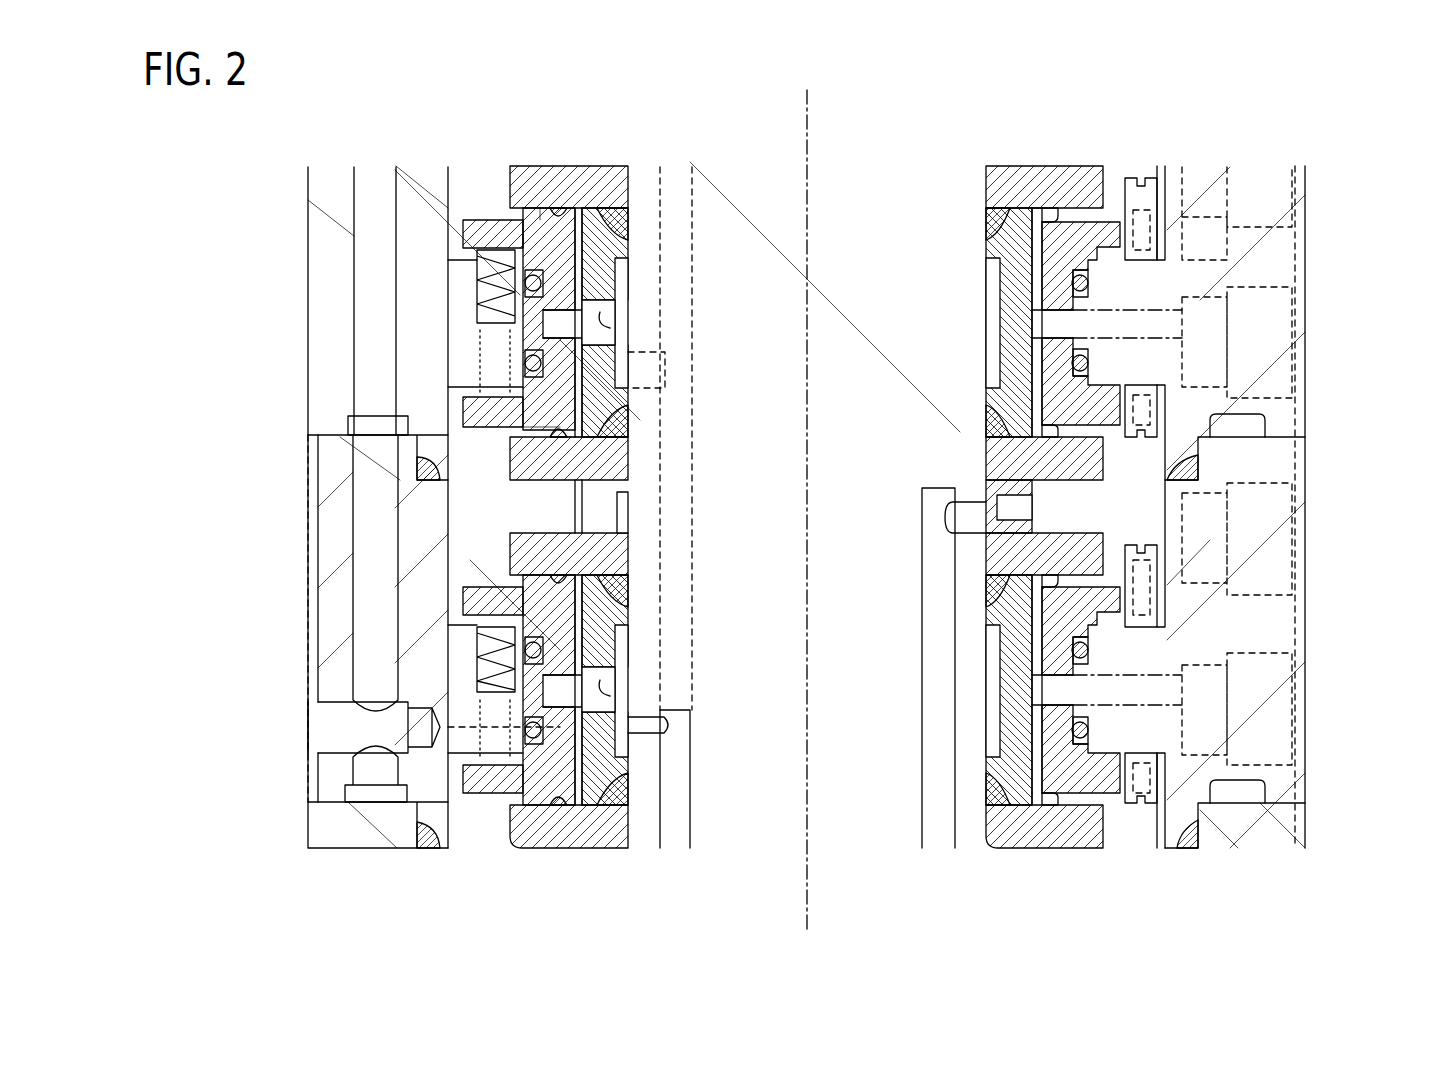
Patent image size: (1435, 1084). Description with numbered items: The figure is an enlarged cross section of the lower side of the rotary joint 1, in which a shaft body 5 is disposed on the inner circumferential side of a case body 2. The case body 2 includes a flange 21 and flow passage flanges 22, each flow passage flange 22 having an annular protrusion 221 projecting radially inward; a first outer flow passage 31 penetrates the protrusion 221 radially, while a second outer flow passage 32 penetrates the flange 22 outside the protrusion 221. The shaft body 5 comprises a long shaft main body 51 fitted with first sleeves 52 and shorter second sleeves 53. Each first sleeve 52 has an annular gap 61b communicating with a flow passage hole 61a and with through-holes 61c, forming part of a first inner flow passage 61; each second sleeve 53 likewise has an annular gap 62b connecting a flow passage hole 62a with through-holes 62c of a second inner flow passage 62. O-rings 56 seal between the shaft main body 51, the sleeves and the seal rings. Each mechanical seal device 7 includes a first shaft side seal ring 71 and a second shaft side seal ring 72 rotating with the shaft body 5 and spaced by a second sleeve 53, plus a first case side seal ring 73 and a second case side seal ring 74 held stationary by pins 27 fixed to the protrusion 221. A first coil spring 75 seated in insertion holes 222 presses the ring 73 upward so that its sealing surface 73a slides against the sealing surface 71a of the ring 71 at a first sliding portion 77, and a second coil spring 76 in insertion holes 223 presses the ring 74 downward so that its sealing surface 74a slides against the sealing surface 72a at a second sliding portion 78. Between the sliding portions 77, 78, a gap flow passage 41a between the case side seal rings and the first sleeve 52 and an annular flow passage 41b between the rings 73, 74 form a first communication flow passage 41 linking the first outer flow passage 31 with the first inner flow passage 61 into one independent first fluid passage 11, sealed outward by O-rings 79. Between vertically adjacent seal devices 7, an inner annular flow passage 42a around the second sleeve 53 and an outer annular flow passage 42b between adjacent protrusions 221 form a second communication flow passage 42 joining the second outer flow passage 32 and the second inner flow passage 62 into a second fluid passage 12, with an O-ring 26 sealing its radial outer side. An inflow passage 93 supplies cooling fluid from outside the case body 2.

The joint 1 is at (274, 151).
The case body 2 is at (302, 250).
The shaft body 5 is at (853, 158).
The mechanical seal device 7 is at (467, 182).
The first fluid passage 11 is at (1302, 350).
The second fluid passage 12 is at (1302, 570).
The flange 21 is at (1290, 825).
The flow passage flange 22 is at (1290, 268).
The O-ring 26 is at (1190, 470).
The pin 27 is at (1140, 215).
The first outer flow passage 31 is at (1298, 300).
The second outer flow passage 32 is at (1135, 513).
The first communication flow passage 41 is at (560, 324).
The gap flow passage 41a is at (1037, 380).
The annular flow passage 41b is at (1040, 322).
The second communication flow passage 42 is at (1080, 492).
The inner annular flow passage 42a is at (1035, 548).
The outer annular flow passage 42b is at (1160, 535).
The shaft main body 51 is at (762, 186).
The first sleeve 52 is at (600, 275).
The second sleeve 53 is at (580, 508).
The O-ring 56 is at (630, 222).
The first inner flow passage 61 is at (692, 283).
The flow passage hole 61a is at (640, 355).
The annular gap 61b is at (992, 330).
The through-hole 61c is at (600, 327).
The second inner flow passage 62 is at (918, 498).
The flow passage hole 62a is at (940, 518).
The annular gap 62b is at (620, 515).
The through-hole 62c is at (1010, 495).
The first shaft side seal ring 71 is at (612, 172).
The sealing surface 71a is at (574, 180).
The second shaft side seal ring 72 is at (525, 456).
The sealing surface 72a is at (600, 425).
The first case side seal ring 73 is at (485, 228).
The sealing surface 73a is at (532, 196).
The second case side seal ring 74 is at (483, 405).
The sealing surface 74a is at (590, 455).
The first coil spring 75 is at (490, 285).
The second coil spring 76 is at (480, 372).
The first sliding portion 77 is at (605, 103).
The second sliding portion 78 is at (748, 408).
The O-ring 79 is at (1073, 283).
The inflow passage 93 is at (310, 735).
The protrusion 221 is at (1102, 275).
The insertion hole 222 is at (477, 300).
The insertion hole 223 is at (555, 352).